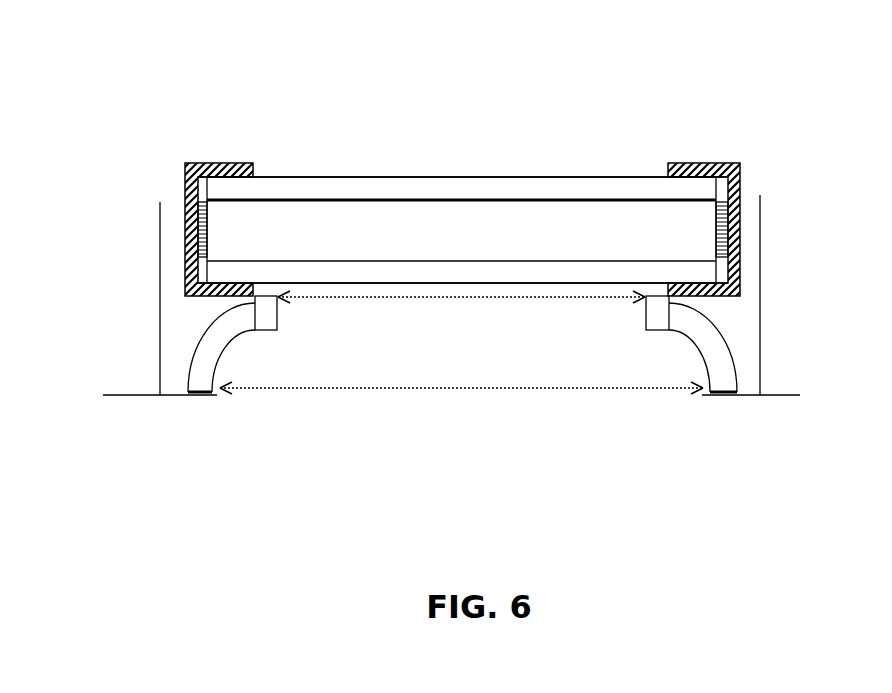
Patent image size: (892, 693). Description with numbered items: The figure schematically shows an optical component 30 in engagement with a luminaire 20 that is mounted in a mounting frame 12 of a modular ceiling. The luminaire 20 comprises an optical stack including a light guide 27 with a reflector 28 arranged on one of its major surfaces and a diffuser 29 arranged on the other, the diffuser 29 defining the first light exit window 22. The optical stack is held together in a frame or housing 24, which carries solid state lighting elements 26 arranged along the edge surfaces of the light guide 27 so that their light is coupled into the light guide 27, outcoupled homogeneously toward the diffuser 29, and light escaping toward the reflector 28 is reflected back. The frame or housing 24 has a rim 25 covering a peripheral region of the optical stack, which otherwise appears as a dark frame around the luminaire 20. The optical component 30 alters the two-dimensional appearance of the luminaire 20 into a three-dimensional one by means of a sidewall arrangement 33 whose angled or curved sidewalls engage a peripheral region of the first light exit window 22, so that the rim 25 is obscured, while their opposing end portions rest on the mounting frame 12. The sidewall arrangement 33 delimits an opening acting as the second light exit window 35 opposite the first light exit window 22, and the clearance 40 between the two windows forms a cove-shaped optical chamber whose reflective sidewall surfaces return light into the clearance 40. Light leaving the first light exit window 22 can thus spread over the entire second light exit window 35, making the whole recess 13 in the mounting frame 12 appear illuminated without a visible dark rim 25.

The luminaire 20 is at (325, 136).
The frame or housing 24 is at (183, 168).
The solid state lighting elements 26 is at (202, 223).
The reflector 28 is at (608, 183).
The light guide 27 is at (465, 222).
The diffuser 29 is at (370, 272).
The rim 25 is at (253, 281).
The first light exit window 22 is at (513, 298).
The mounting frame 12 is at (160, 278).
The sidewall arrangement 33 is at (212, 340).
The optical component 30 is at (190, 395).
The recess 13 is at (292, 395).
The second light exit window 35 is at (440, 388).
The clearance 40 is at (512, 362).